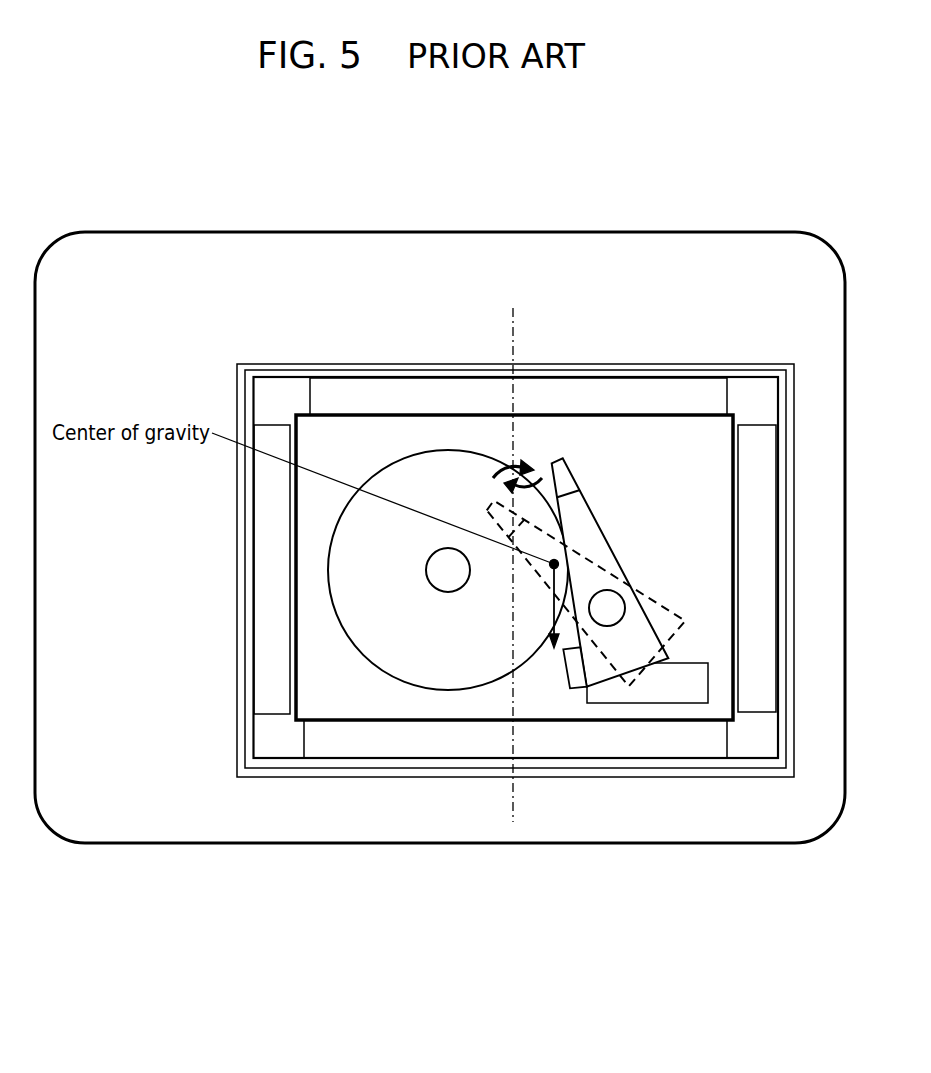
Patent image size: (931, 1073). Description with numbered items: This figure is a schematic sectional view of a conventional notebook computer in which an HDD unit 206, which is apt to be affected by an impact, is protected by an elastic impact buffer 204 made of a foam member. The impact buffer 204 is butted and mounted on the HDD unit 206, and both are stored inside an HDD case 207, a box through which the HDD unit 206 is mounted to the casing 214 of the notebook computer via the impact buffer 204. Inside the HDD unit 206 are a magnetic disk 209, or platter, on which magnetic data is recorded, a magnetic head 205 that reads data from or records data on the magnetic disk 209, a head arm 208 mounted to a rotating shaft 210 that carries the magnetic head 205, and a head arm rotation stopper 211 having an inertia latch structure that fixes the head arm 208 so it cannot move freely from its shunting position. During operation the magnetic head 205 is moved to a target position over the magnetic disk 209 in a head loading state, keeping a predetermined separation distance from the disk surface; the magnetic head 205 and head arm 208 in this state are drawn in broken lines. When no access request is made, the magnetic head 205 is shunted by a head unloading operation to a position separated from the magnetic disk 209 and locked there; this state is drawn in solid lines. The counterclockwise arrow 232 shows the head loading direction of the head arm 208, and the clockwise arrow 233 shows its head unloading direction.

The impact buffer 204 is at (603, 395).
The magnetic head 205 is at (567, 483).
The HDD unit 206 is at (344, 708).
The HDD case 207 is at (747, 765).
The head arm 208 is at (634, 561).
The magnetic disk 209 is at (422, 467).
The rotating shaft 210 is at (608, 607).
The head arm rotation stopper 211 is at (577, 675).
The casing 214 is at (135, 828).
The counterclockwise arrow 232 is at (538, 473).
The clockwise arrow 233 is at (496, 472).